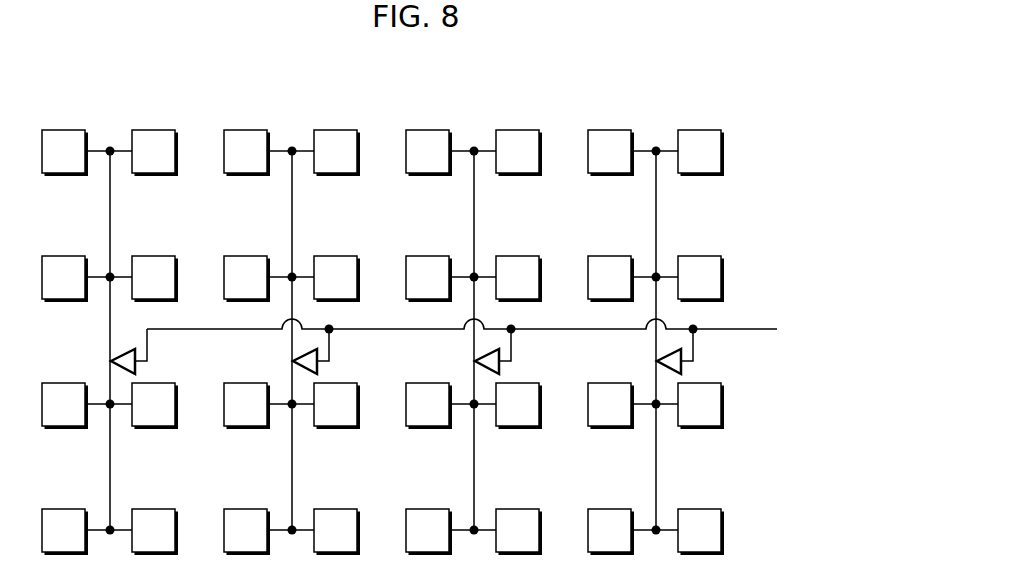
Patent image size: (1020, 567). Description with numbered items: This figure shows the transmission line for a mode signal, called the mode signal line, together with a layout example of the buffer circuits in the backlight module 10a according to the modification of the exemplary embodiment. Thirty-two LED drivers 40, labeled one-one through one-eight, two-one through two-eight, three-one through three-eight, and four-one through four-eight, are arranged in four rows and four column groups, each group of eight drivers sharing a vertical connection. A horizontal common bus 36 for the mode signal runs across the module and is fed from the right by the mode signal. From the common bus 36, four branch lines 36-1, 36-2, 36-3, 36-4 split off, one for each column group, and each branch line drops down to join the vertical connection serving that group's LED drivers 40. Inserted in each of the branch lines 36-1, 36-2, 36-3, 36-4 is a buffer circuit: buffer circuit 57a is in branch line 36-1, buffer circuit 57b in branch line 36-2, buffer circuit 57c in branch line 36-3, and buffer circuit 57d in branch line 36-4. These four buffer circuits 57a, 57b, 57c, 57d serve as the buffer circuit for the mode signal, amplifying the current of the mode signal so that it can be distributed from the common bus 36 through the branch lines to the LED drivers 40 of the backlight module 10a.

The backlight module 10a is at (113, 88).
The LED driver 40 is at (724, 144).
The common bus 36 is at (713, 329).
The branch line 36-1 is at (693, 340).
The branch line 36-2 is at (511, 340).
The branch line 36-3 is at (329, 340).
The branch line 36-4 is at (147, 340).
The buffer circuit 57a is at (681, 368).
The buffer circuit 57b is at (499, 368).
The buffer circuit 57c is at (317, 368).
The buffer circuit 57d is at (135, 368).